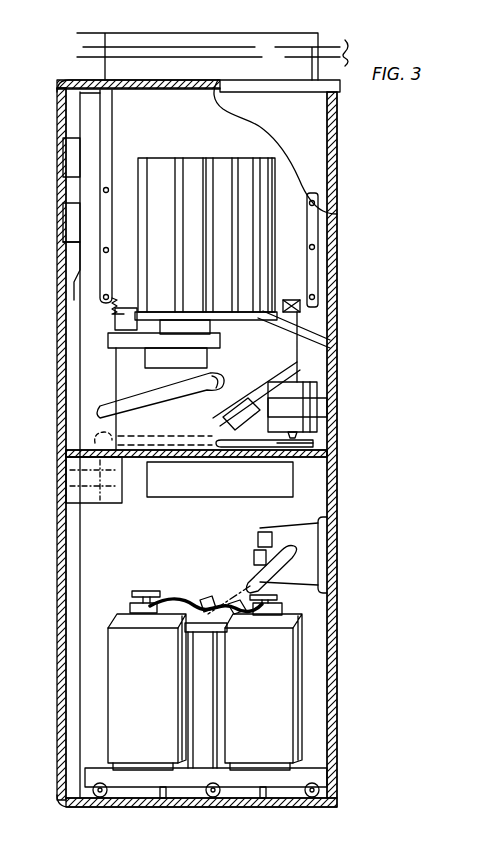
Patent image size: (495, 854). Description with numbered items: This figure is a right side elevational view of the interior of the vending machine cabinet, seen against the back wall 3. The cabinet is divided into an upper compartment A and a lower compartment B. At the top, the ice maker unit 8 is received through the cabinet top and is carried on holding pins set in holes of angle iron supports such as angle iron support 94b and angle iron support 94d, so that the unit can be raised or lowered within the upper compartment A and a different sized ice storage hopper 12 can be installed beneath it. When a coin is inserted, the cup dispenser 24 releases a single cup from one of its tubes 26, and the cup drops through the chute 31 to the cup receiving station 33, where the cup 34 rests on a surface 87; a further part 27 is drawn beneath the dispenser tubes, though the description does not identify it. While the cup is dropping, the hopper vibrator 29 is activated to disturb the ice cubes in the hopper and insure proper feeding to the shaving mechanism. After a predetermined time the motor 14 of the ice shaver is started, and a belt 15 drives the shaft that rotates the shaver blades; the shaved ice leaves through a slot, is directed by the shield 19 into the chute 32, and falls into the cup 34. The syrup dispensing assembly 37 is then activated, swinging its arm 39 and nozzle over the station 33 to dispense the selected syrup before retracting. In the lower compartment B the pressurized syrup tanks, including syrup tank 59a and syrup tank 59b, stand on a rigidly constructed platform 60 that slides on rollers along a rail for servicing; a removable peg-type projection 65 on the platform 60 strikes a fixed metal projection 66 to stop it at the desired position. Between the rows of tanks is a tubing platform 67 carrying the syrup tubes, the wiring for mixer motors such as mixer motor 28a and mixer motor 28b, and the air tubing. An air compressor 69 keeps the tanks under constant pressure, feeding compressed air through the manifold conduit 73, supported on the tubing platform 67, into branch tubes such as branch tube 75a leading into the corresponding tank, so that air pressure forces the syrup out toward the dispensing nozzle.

The ice maker unit 8 is at (103, 34).
The back wall 3 is at (328, 380).
The upper compartment A is at (322, 320).
The lower compartment B is at (312, 508).
The angle iron support 94b is at (111, 164).
The cup dispenser 24 is at (239, 158).
The tubes 26 is at (203, 163).
The angle iron support 94d is at (319, 245).
The roller support bracket 27 is at (215, 334).
The ice storage hopper 12 is at (250, 365).
The motor 14 is at (296, 384).
The chute 31 is at (154, 393).
The hopper vibrator 29 is at (216, 418).
The belt 15 is at (228, 460).
The chute 32 is at (84, 416).
The shield 19 is at (82, 437).
The cup 34 is at (66, 492).
The arm 39 is at (132, 482).
The cup receiving station 33 is at (100, 504).
The surface 87 is at (92, 504).
The syrup dispensing assembly 37 is at (212, 505).
The air compressor 69 is at (258, 537).
The manifold conduit 73 is at (254, 571).
The mixer motor 28a is at (178, 603).
The mixer motor 28b is at (263, 682).
The branch tube 75a is at (147, 680).
The tubing platform 67 is at (207, 632).
The syrup tank 59a is at (156, 701).
The syrup tank 59b is at (280, 705).
The metal projection 66 is at (160, 777).
The peg-type projection 65 is at (270, 777).
The platform 60 is at (318, 779).